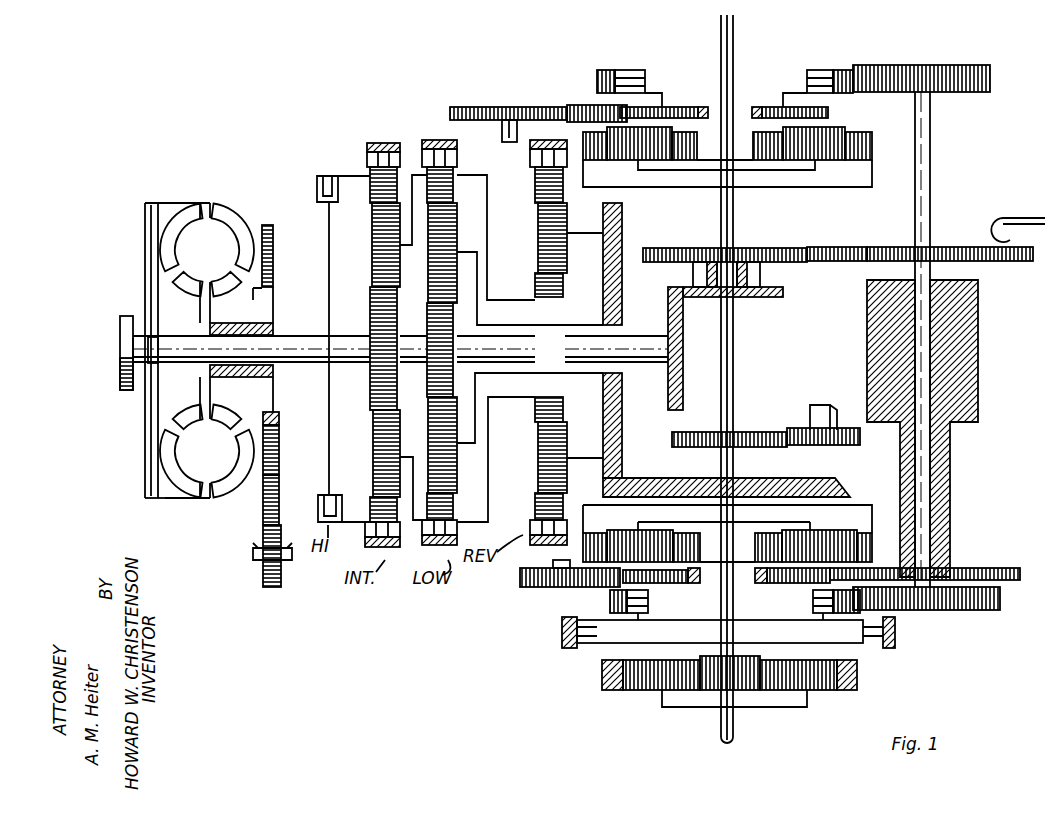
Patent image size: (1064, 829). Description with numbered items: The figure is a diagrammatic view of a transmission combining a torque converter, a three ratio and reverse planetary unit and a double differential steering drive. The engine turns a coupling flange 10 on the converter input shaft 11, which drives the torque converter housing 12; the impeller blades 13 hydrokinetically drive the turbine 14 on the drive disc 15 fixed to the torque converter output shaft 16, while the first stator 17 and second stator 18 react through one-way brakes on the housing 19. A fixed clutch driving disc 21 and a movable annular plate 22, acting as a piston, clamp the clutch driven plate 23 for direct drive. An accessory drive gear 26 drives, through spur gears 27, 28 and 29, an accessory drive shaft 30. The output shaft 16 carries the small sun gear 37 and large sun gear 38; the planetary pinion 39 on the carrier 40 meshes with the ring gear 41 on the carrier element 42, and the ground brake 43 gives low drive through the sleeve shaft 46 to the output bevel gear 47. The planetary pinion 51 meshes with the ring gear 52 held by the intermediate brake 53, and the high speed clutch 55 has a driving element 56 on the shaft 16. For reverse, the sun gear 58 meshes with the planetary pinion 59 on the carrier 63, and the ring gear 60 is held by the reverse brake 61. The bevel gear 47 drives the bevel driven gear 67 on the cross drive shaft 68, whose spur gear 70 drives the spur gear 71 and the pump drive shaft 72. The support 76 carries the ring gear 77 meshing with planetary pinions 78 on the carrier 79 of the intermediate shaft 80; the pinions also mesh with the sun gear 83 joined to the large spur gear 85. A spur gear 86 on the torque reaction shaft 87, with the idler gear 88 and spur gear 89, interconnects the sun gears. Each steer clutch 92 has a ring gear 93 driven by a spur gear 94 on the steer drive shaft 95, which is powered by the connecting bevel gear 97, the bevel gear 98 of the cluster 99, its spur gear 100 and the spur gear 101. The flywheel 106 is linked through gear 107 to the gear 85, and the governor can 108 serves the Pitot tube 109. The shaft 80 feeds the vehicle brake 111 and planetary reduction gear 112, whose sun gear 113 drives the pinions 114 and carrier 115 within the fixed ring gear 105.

The coupling flange 10 is at (118, 368).
The converter input shaft 11 is at (134, 384).
The torque converter housing 12 is at (203, 499).
The impeller blades 13 is at (242, 472).
The turbine 14 is at (180, 499).
The drive disc 15 is at (164, 372).
The torque converter output shaft 16 is at (286, 364).
The first stator 17 is at (192, 420).
The second stator 18 is at (220, 418).
The housing 19 is at (232, 378).
The fixed clutch driving disc 21 is at (200, 212).
The movable annular plate 22 is at (145, 208).
The clutch driven plate 23 is at (153, 205).
The accessory drive gear 26 is at (280, 418).
The spur gear 27 is at (280, 455).
The spur gear 28 is at (280, 492).
The spur gear 29 is at (280, 580).
The accessory drive shaft 30 is at (256, 560).
The small sun gear 37 is at (455, 372).
The large sun gear 38 is at (372, 320).
The planetary pinion 39 is at (448, 228).
The carrier 40 is at (480, 306).
The ring gear 41 is at (453, 192).
The carrier element 42 is at (490, 228).
The ground clutch or brake 43 is at (438, 140).
The sleeve shaft 46 is at (546, 325).
The output bevel gear 47 is at (620, 290).
The planetary pinion 51 is at (372, 253).
The ring gear 52 is at (370, 210).
The intermediate brake 53 is at (384, 142).
The high speed clutch 55 is at (320, 178).
The driving element 56 is at (328, 260).
The sun gear 58 is at (565, 286).
The planetary pinion 59 is at (538, 262).
The ring gear 60 is at (535, 200).
The reverse brake 61 is at (530, 170).
The carrier 63 is at (586, 232).
The bevel driven gear 67 is at (646, 484).
The cross drive shaft 68 is at (733, 356).
The spur gear 70 is at (740, 432).
The spur gear 71 is at (796, 428).
The brake cooling pump and output pump drive shaft 72 is at (818, 403).
The support 76 is at (853, 508).
The ring gear 77 is at (872, 558).
The planetary pinions 78 is at (820, 536).
The carrier 79 is at (750, 180).
The intermediate shaft 80 is at (733, 88).
The sun gear 83 is at (702, 118).
The large spur gear 85 is at (670, 107).
The spur gear 86 is at (540, 588).
The torque reaction shaft 87 is at (504, 140).
The idler gear 88 is at (598, 106).
The spur gear 89 is at (526, 106).
The steer clutch 92 is at (815, 70).
The ring gear 93 is at (843, 70).
The spur gear 94 is at (925, 65).
The steer drive shaft 95 is at (930, 170).
The connecting bevel gear 97 is at (683, 350).
The bevel gear 98 is at (783, 293).
The cluster 99 is at (760, 270).
The spur gear 100 is at (760, 250).
The spur gear 101 is at (1010, 262).
The ring gear 105 is at (858, 676).
The flywheel 106 is at (978, 383).
The gear 107 is at (990, 568).
The Pitot tube governor can 108 is at (840, 247).
The Pitot tube 109 is at (1003, 218).
The vehicle brake 111 is at (566, 632).
The planetary reduction gear 112 is at (602, 676).
The sun gear 113 is at (714, 706).
The pinions 114 is at (640, 690).
The carrier 115 is at (780, 706).